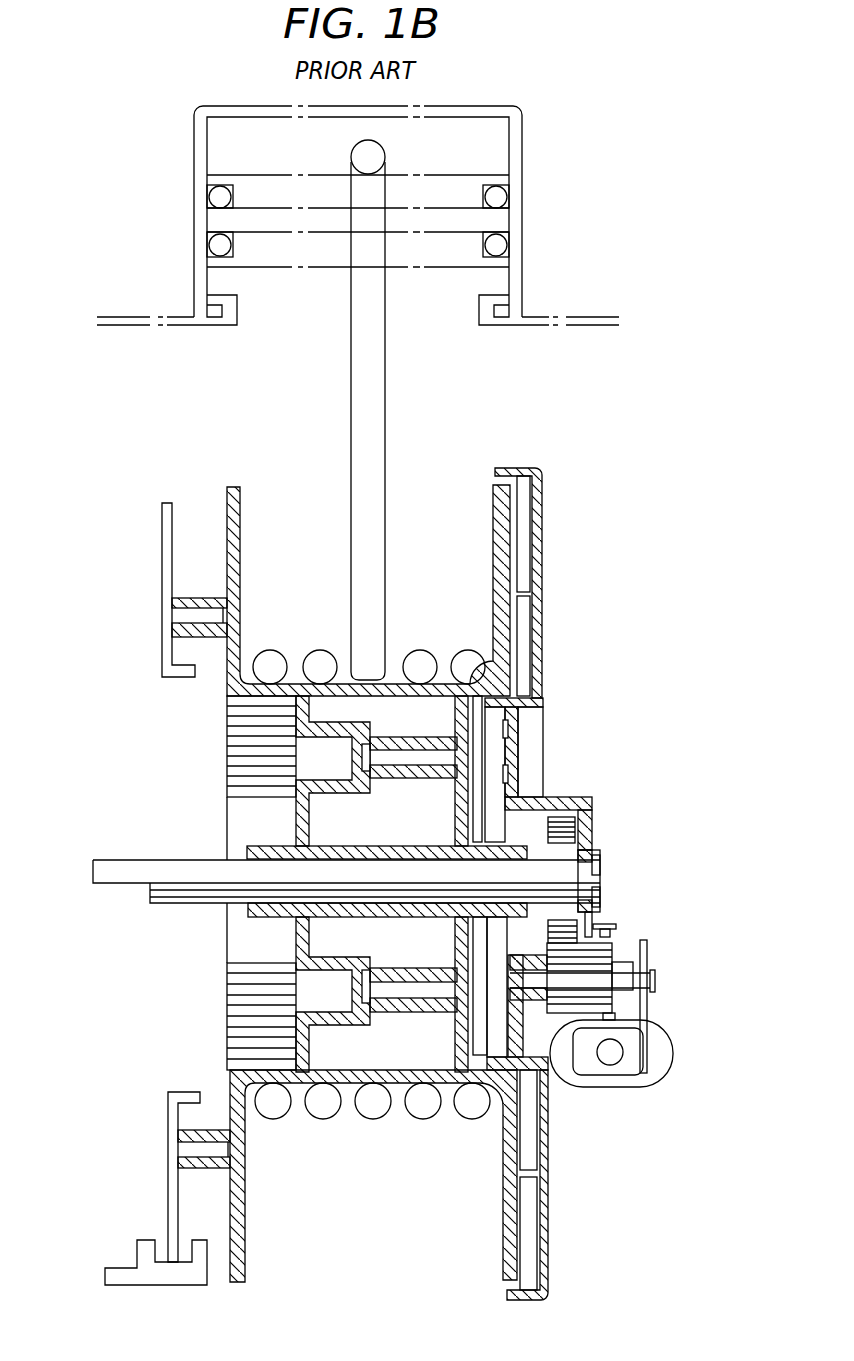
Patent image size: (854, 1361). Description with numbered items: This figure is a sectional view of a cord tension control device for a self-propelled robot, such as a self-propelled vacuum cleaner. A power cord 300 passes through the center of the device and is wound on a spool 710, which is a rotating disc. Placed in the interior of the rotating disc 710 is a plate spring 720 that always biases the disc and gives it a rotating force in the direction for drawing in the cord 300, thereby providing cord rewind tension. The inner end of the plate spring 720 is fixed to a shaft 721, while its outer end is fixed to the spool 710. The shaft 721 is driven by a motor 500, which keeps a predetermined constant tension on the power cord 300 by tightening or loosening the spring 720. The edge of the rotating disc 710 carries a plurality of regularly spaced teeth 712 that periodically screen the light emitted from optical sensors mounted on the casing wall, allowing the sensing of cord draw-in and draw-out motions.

The power cord 300 is at (380, 408).
The motor 500 is at (672, 1047).
The spool 710 is at (518, 686).
The teeth 712 is at (237, 1207).
The plate spring 720 is at (230, 747).
The shaft 721 is at (108, 870).